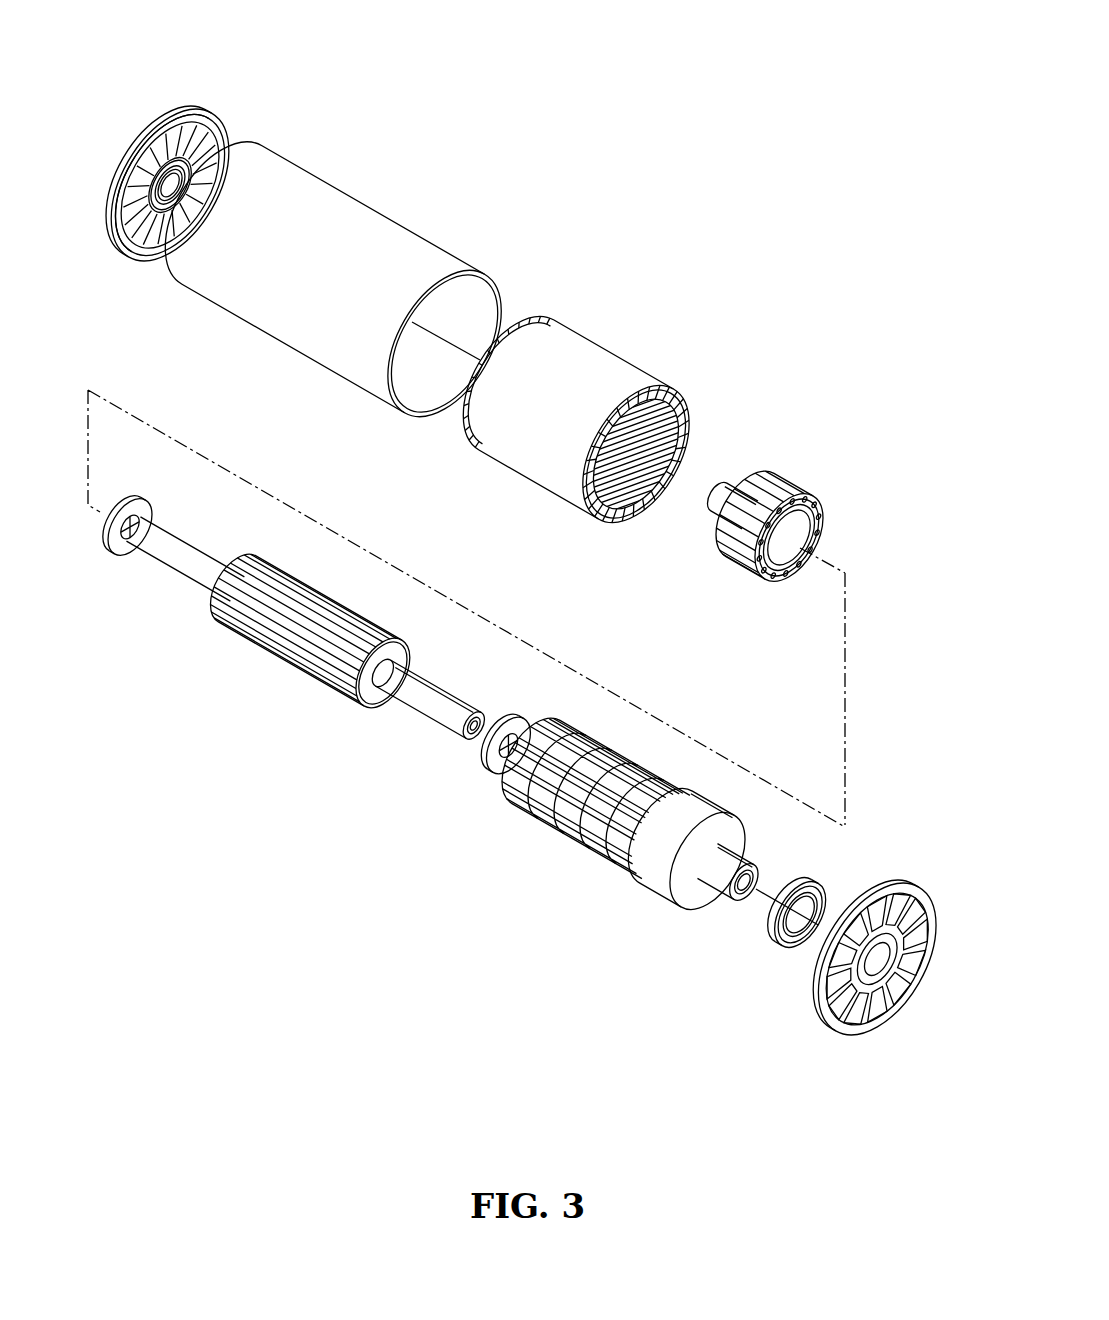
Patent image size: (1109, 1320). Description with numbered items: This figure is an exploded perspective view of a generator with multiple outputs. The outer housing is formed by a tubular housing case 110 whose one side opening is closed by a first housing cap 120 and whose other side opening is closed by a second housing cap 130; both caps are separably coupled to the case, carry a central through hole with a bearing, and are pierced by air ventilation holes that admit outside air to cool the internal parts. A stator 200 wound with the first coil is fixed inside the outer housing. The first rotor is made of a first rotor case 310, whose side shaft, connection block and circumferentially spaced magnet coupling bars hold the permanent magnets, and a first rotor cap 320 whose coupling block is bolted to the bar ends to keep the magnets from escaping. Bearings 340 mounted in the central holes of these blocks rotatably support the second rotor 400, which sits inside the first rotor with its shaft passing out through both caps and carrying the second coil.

The housing case 110 is at (335, 205).
The first housing cap 120 is at (878, 926).
The second housing cap 130 is at (168, 149).
The stator 200 is at (576, 368).
The first rotor case 310 is at (631, 878).
The first rotor cap 320 is at (773, 462).
The bearing 340 is at (117, 547).
The second rotor 400 is at (307, 636).